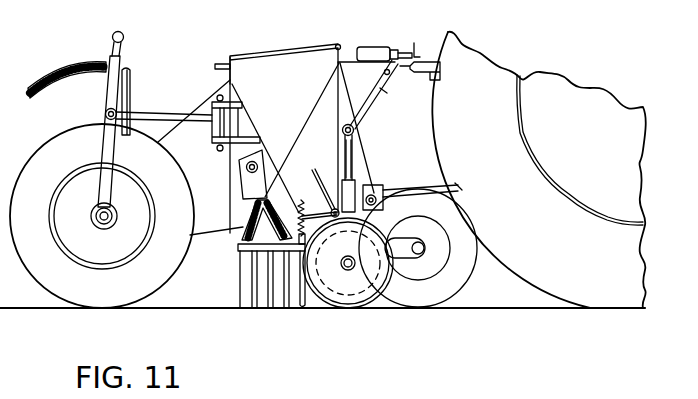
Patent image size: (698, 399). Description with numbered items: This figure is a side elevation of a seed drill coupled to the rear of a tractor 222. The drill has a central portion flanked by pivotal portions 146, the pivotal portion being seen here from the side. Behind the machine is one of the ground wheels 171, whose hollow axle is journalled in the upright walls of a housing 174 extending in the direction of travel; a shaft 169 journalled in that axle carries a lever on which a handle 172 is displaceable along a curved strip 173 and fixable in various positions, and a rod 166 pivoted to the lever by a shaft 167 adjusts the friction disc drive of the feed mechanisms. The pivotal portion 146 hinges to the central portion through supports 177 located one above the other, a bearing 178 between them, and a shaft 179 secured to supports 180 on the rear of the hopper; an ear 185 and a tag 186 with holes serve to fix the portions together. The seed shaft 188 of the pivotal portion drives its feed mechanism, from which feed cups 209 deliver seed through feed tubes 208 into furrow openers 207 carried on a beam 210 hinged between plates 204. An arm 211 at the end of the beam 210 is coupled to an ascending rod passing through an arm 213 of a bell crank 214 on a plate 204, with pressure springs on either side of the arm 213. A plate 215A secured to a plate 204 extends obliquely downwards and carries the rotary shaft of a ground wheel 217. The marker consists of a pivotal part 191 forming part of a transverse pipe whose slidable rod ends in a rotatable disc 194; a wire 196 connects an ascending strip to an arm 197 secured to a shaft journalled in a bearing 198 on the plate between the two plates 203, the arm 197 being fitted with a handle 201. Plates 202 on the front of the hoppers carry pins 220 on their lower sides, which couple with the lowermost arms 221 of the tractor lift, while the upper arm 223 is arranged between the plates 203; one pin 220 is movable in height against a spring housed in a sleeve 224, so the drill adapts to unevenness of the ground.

The pivotal portion 146 is at (286, 48).
The rod 166 is at (154, 121).
The shaft 167 is at (105, 113).
The shaft 169 is at (98, 226).
The ground wheel 171 is at (45, 290).
The handle 172 is at (124, 40).
The curved strip 173 is at (96, 68).
The housing 174 is at (196, 110).
The support 177 is at (254, 136).
The bearing 178 is at (212, 131).
The shaft 179 is at (217, 151).
The support 180 is at (236, 90).
The ear 185 is at (222, 62).
The tag 186 is at (215, 67).
The seed shaft 188 is at (240, 168).
The pivotal part 191 is at (344, 170).
The rotatable disc 194 is at (351, 310).
The wire 196 is at (384, 92).
The arm 197 is at (364, 152).
The bearing 198 is at (375, 47).
The handle 201 is at (414, 43).
The plate 202 is at (344, 126).
The plate 203 is at (382, 100).
The plate 204 is at (336, 80).
The furrow opener 207 is at (280, 310).
The feed tube 208 is at (240, 240).
The feed cup 209 is at (236, 188).
The beam 210 is at (341, 253).
The arm 211 is at (346, 265).
The arm 213 is at (322, 200).
The bell crank 214 is at (322, 172).
The plate 215A is at (402, 262).
The ground wheel 217 is at (456, 288).
The pin 220 is at (386, 192).
The lowermost arm 221 is at (460, 192).
The tractor 222 is at (595, 305).
The upper arm 223 is at (440, 84).
The sleeve 224 is at (384, 185).